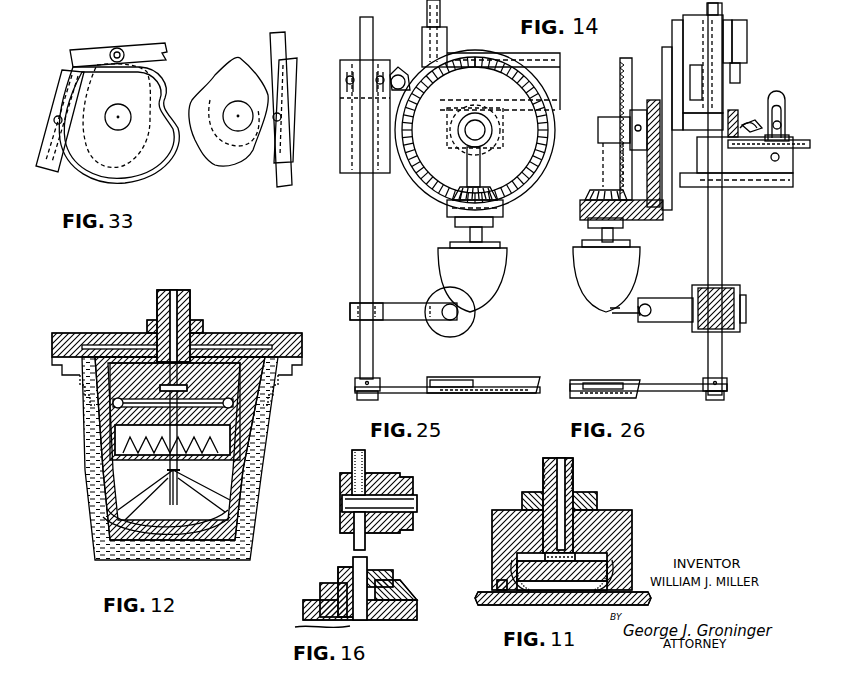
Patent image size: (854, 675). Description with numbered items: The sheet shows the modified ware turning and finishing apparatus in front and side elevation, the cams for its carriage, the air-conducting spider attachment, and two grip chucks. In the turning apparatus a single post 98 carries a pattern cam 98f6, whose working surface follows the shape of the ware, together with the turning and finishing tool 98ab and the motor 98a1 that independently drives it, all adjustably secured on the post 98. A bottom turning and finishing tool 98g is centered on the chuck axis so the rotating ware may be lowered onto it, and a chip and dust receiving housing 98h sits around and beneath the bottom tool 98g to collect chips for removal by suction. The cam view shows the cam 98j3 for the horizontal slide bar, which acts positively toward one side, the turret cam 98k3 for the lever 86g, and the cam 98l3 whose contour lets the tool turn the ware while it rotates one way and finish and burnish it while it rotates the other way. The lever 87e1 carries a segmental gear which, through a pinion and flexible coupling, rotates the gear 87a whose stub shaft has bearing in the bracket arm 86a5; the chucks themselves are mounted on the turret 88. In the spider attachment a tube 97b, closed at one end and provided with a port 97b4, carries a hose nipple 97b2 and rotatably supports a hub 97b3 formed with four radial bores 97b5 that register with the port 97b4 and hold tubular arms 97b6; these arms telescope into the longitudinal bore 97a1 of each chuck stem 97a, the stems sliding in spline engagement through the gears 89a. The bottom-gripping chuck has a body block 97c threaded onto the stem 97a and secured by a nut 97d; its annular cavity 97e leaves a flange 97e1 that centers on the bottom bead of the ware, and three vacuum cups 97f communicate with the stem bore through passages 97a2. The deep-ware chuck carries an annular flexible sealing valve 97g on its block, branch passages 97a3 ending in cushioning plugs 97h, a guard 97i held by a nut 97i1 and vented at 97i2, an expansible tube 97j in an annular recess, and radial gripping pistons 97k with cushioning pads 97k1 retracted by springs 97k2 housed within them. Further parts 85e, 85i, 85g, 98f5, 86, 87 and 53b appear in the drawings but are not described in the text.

In FIG. 33, the lever arm 85e is at (143, 45).
In FIG. 33, the slotted link 85i is at (64, 84).
In FIG. 25, the frame plate 85g is at (560, 75).
In FIG. 26, the frame plate 85g is at (622, 129).
In FIG. 33, the cam for horizontal slide bar 98j3 is at (155, 178).
In FIG. 33, the cam 98l3 is at (86, 180).
In FIG. 33, the turret cam 98k3 is at (220, 168).
In FIG. 33, the lever 87e1 is at (288, 45).
In FIG. 33, the lever 86g is at (294, 82).
In FIG. 25, the post 98 is at (374, 252).
In FIG. 26, the post 98 is at (722, 357).
In FIG. 25, the upper connecting link 98f5 is at (398, 74).
In FIG. 25, the pattern cam 98f6 is at (340, 172).
In FIG. 25, the motor 98a1 is at (465, 326).
In FIG. 26, the motor 98a1 is at (738, 290).
In FIG. 26, the turning and finishing tool 98ab is at (604, 313).
In FIG. 25, the bottom turning and finishing tool 98g is at (483, 385).
In FIG. 26, the bottom turning and finishing tool 98g is at (612, 378).
In FIG. 26, the chip and dust receiving housing 98h is at (640, 388).
In FIG. 25, the gear housing 86 is at (552, 148).
In FIG. 26, the gear housing 86 is at (672, 207).
In FIG. 26, the bracket arm 86a5 is at (765, 185).
In FIG. 26, the rack member 87 is at (736, 108).
In FIG. 26, the gear 87a is at (795, 132).
In FIG. 26, the hose nipple 97b2 is at (752, 120).
In FIG. 26, the turret 88 is at (645, 222).
In FIG. 16, the turret 88 is at (417, 610).
In FIG. 12, the mold bottom 53b is at (105, 547).
In FIG. 12, the stem 97a is at (190, 300).
In FIG. 16, the stem 97a is at (345, 570).
In FIG. 11, the stem 97a is at (550, 458).
In FIG. 12, the longitudinal bore 97a1 is at (173, 290).
In FIG. 16, the longitudinal bore 97a1 is at (309, 620).
In FIG. 11, the longitudinal bore 97a1 is at (557, 468).
In FIG. 12, the passages 97a2 is at (120, 482).
In FIG. 11, the passages 97a2 is at (520, 562).
In FIG. 12, the branch passages 97a3 is at (110, 504).
In FIG. 16, the tube 97b is at (417, 496).
In FIG. 16, the hub 97b3 is at (380, 473).
In FIG. 16, the port 97b4 is at (343, 510).
In FIG. 16, the radial bores 97b5 is at (342, 490).
In FIG. 16, the tubular arms 97b6 is at (352, 462).
In FIG. 12, the body block 97c is at (108, 465).
In FIG. 11, the body block 97c is at (632, 515).
In FIG. 12, the nut 97d is at (210, 333).
In FIG. 11, the nut 97d is at (597, 502).
In FIG. 11, the annular cavity 97e is at (512, 605).
In FIG. 11, the centering flange 97e1 is at (497, 586).
In FIG. 11, the vacuum cups 97f is at (512, 578).
In FIG. 12, the annular flexible sealing valve 97g is at (108, 333).
In FIG. 12, the cushioning plugs 97h is at (103, 522).
In FIG. 12, the guard 97i is at (52, 333).
In FIG. 12, the nut 97i1 is at (150, 333).
In FIG. 12, the vent 97i2 is at (115, 332).
In FIG. 12, the expansible tube 97j is at (113, 402).
In FIG. 12, the gripping pistons 97k is at (115, 428).
In FIG. 12, the cushioning pads 97k1 is at (123, 445).
In FIG. 12, the springs 97k2 is at (245, 418).
In FIG. 16, the gears 89a is at (320, 592).